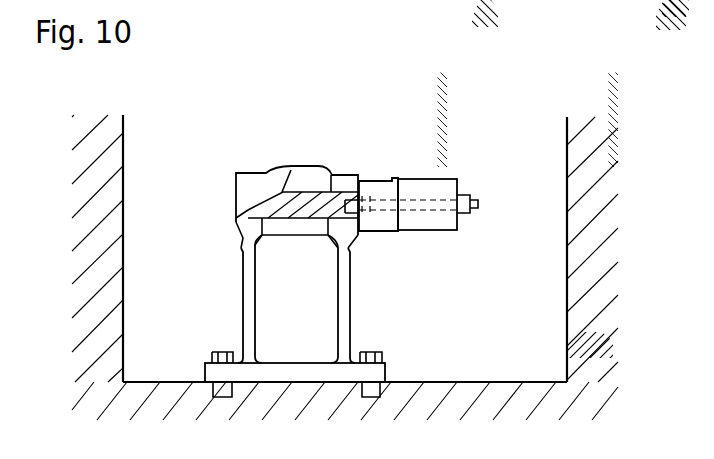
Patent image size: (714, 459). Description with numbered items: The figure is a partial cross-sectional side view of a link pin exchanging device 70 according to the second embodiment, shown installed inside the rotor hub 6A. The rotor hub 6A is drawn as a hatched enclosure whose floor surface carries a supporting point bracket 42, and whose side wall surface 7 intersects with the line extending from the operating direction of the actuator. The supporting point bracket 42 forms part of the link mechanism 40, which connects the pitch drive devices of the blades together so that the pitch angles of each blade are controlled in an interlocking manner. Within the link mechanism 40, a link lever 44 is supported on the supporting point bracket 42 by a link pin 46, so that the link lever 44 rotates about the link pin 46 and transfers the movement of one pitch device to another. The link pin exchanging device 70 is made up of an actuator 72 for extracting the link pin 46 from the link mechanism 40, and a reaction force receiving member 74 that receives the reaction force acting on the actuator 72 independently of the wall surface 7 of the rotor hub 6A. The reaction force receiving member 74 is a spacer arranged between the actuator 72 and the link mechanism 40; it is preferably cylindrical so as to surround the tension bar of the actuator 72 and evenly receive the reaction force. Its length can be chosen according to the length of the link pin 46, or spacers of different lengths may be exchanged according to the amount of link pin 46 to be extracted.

The wall surface 7 is at (124, 162).
The rotor hub 6A is at (510, 381).
The link mechanism 40 is at (455, 229).
The supporting point bracket 42 is at (243, 252).
The link lever 44 is at (316, 167).
The link pin 46 is at (304, 237).
The link pin exchanging device 70 is at (439, 164).
The actuator 72 is at (428, 178).
The reaction force receiving member 74 is at (378, 180).